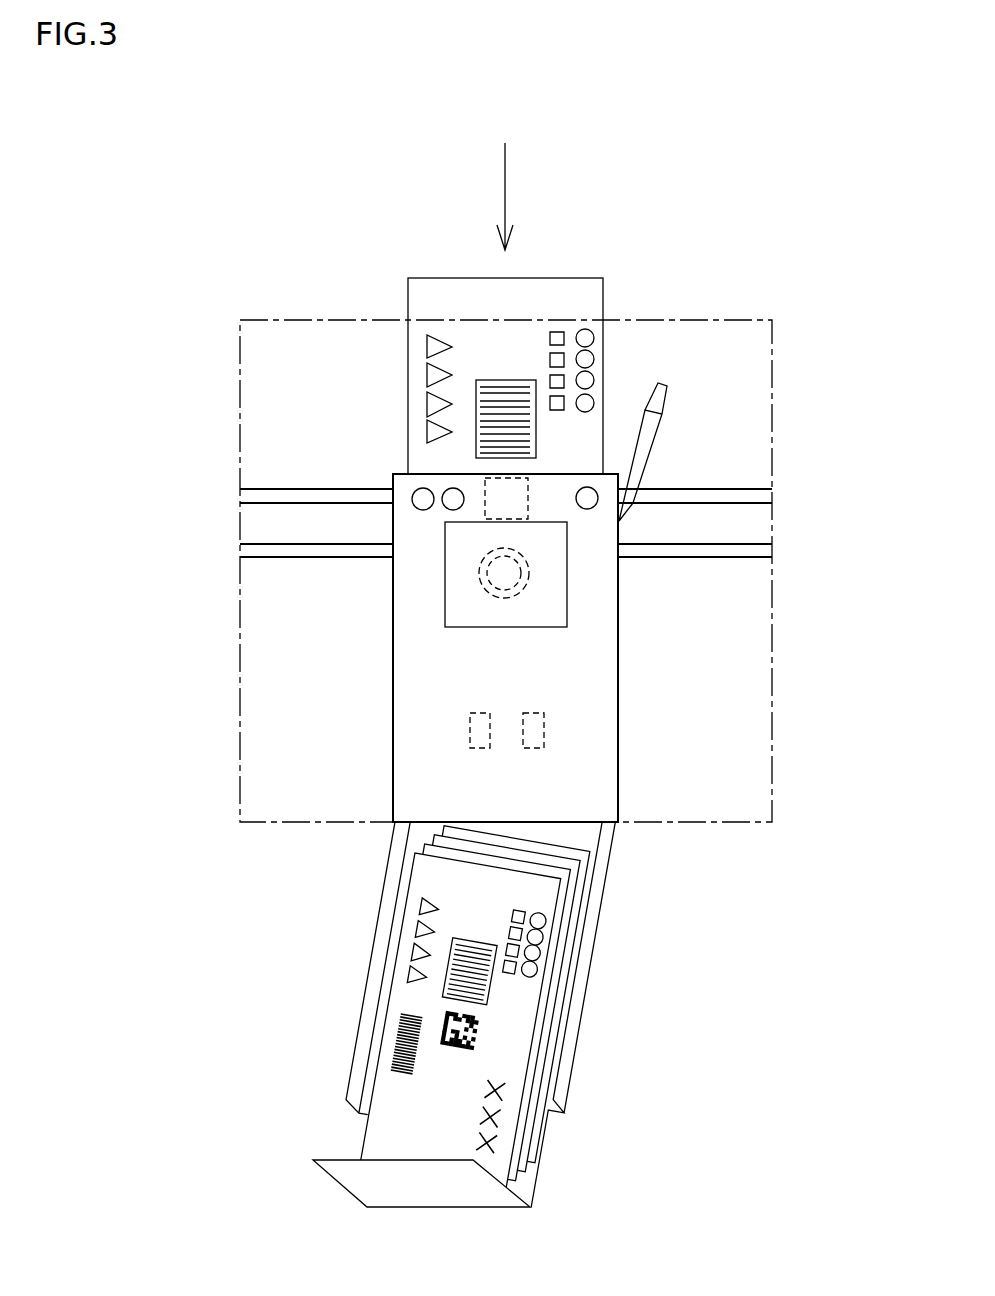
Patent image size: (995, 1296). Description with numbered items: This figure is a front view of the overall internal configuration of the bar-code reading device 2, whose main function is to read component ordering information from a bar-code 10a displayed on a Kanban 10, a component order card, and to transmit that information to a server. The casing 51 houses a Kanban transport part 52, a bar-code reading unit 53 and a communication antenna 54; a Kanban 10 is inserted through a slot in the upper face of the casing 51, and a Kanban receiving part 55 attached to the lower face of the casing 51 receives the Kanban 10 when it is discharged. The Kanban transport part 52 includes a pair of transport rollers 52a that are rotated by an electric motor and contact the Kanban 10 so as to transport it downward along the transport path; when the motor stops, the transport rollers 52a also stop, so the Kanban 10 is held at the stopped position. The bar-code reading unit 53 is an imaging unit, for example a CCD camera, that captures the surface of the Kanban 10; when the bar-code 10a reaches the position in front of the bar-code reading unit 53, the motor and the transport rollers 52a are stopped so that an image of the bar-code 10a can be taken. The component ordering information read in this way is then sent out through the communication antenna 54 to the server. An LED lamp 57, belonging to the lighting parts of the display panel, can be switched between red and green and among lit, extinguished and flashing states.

The bar-code reading device 2 is at (224, 197).
The Kanban 10 is at (467, 686).
The bar-code 10a is at (495, 380).
The casing 51 is at (743, 320).
The Kanban transport part 52 is at (507, 648).
The transport rollers 52a is at (470, 735).
The bar-code reading unit 53 is at (432, 602).
The communication antenna 54 is at (645, 442).
The Kanban receiving part 55 is at (590, 990).
The LED lamp 57 is at (424, 498).